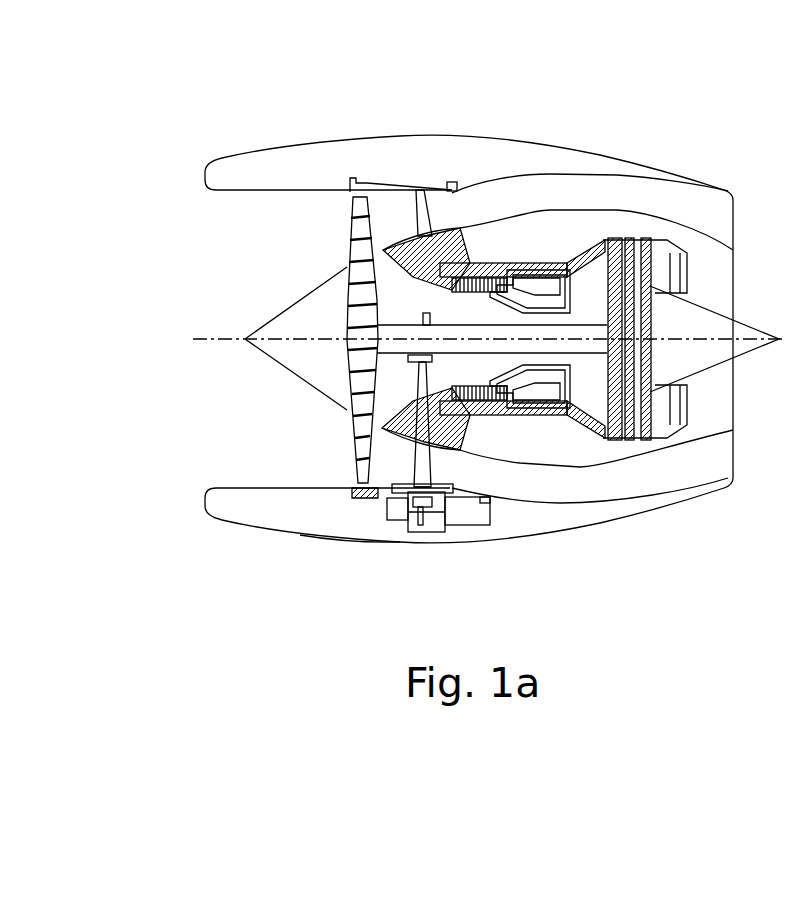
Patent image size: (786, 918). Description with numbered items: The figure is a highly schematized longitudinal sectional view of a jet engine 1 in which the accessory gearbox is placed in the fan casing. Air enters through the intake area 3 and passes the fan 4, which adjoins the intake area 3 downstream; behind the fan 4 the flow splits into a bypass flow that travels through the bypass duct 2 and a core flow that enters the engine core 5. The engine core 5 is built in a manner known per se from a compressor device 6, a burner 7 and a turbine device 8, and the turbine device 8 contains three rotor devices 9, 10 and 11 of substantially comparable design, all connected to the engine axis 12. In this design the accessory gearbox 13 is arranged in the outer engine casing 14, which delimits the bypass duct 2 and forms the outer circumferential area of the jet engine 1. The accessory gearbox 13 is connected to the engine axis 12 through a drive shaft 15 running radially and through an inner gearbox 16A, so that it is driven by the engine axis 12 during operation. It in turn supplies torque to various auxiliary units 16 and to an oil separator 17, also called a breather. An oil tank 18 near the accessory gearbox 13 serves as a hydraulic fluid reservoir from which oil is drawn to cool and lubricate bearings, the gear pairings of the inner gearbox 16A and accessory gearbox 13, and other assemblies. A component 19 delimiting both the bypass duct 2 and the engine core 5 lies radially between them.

The jet engine 1 is at (262, 125).
The bypass duct 2 is at (470, 266).
The intake area 3 is at (218, 218).
The fan 4 is at (348, 194).
The engine core 5 is at (381, 427).
The compressor device 6 is at (450, 173).
The burner 7 is at (543, 280).
The turbine device 8 is at (621, 235).
The rotor device 9 is at (550, 262).
The rotor device 10 is at (637, 240).
The rotor device 11 is at (652, 237).
The engine axis 12 is at (577, 355).
The accessory gearbox 13 is at (438, 534).
The outer engine casing 14 is at (337, 537).
The drive shaft 15 is at (388, 514).
The auxiliary units 16 is at (483, 530).
The oil separator 17 is at (488, 502).
The oil tank 18 is at (405, 531).
The component 19 is at (392, 492).
The inner gearbox 16A is at (399, 369).